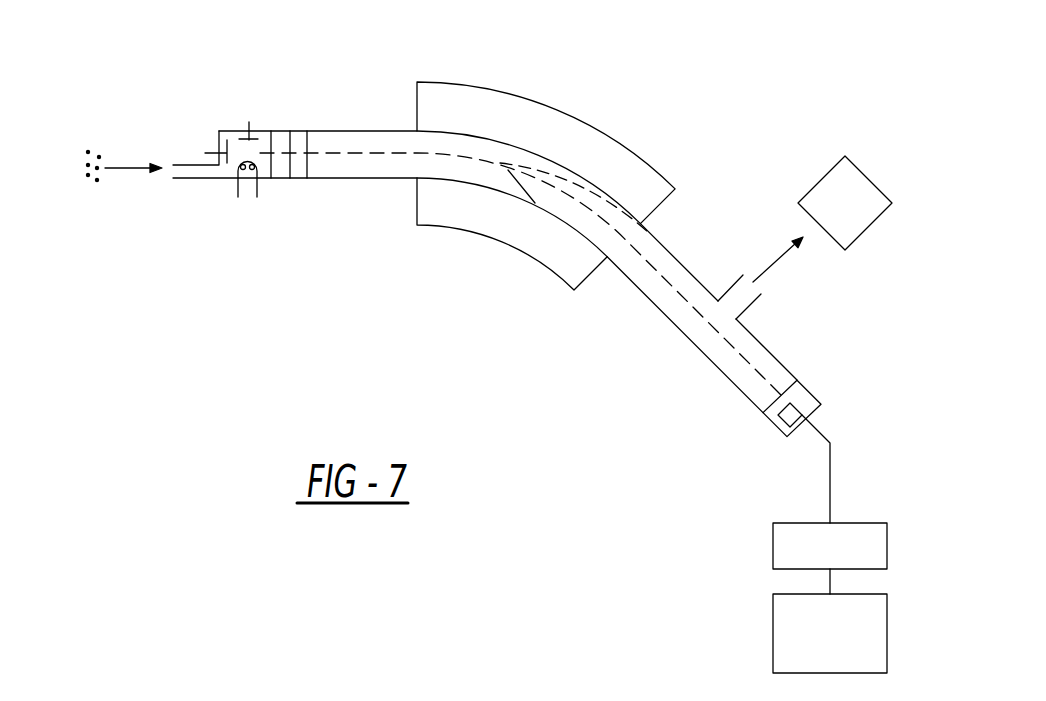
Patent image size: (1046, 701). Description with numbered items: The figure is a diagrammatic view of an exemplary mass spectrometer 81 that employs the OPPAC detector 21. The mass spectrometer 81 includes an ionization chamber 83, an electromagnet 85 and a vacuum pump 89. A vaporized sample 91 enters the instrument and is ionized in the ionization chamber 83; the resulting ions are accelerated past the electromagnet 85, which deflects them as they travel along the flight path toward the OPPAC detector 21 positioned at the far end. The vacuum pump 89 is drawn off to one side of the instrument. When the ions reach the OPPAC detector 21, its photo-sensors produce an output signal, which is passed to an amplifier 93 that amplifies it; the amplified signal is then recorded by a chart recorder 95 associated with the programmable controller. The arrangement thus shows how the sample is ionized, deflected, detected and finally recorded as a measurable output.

The mass spectrometer 81 is at (779, 143).
The ionization chamber 83 is at (262, 172).
The electromagnet 85 is at (575, 143).
The vacuum pump 89 is at (862, 214).
The vaporized sample 91 is at (95, 143).
The OPPAC detector 21 is at (808, 398).
The amplifier 93 is at (773, 547).
The chart recorder 95 is at (773, 633).